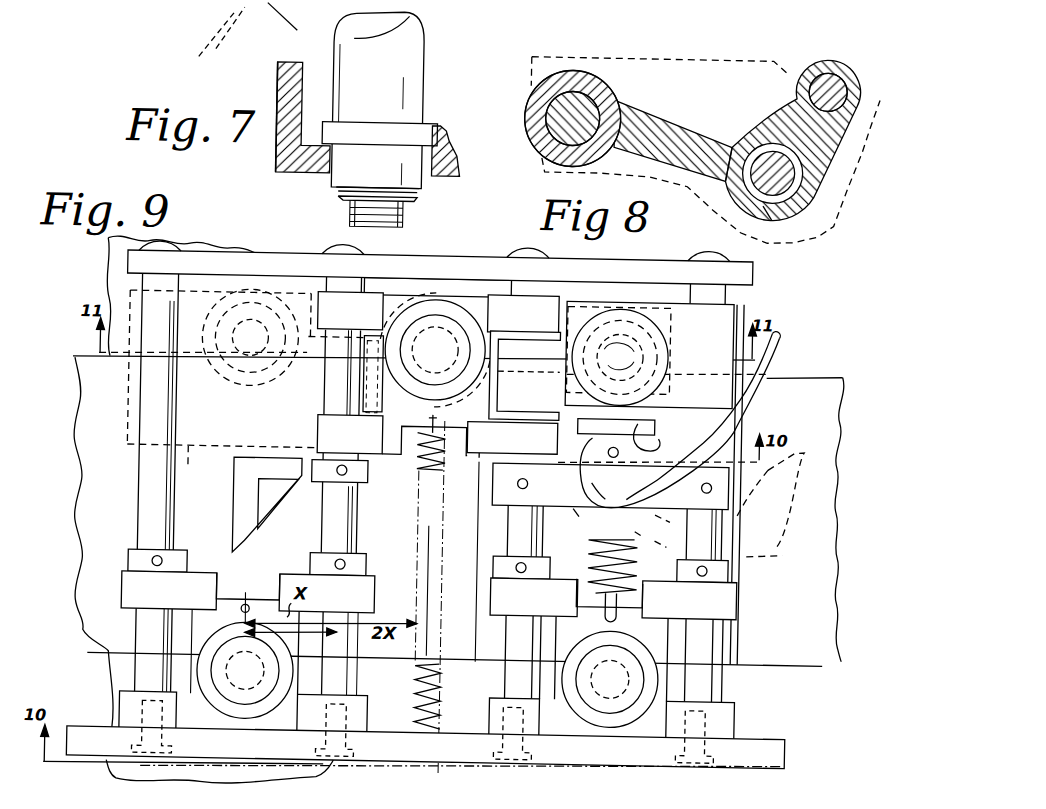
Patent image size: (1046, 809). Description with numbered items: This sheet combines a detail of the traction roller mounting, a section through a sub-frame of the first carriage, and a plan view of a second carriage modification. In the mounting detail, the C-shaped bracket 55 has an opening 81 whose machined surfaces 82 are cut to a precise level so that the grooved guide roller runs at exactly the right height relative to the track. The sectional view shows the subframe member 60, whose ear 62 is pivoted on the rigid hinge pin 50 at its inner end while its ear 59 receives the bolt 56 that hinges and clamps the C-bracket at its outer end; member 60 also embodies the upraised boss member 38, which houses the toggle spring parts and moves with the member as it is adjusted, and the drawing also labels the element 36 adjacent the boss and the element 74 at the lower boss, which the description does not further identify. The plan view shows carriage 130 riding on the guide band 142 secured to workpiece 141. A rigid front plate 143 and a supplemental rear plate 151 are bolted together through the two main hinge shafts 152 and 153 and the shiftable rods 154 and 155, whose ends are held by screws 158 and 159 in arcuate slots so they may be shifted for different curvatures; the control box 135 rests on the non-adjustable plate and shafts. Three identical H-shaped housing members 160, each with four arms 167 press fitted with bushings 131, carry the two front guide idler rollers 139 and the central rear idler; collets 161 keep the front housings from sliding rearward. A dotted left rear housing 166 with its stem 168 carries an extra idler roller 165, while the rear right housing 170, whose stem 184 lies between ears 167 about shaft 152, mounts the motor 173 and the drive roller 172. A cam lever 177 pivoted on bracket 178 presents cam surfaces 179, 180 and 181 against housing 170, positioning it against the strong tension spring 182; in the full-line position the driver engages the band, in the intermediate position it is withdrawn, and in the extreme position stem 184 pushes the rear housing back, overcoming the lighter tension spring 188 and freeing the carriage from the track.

In FIG. 7, the C-shaped bracket 55 is at (273, 97).
In FIG. 8, the C-shaped bracket 55 is at (634, 54).
In FIG. 7, the opening 81 is at (304, 90).
In FIG. 7, the machined surfaces 82 is at (310, 136).
In FIG. 8, the pivot pin 36 is at (806, 82).
In FIG. 8, the upraised boss member 38 is at (840, 58).
In FIG. 8, the hinge pin 50 is at (555, 118).
In FIG. 8, the bolt 56 is at (773, 183).
In FIG. 8, the ear 59 is at (753, 204).
In FIG. 8, the subframe member 60 is at (672, 122).
In FIG. 8, the ear 62 is at (600, 80).
In FIG. 8, the bearing ring 74 is at (798, 161).
In FIG. 9, the carriage 130 is at (752, 707).
In FIG. 9, the bushing 131 is at (128, 584).
In FIG. 9, the control box 135 is at (258, 532).
In FIG. 9, the front guide idler roller 139 is at (490, 318).
In FIG. 9, the workpiece 141 is at (108, 672).
In FIG. 9, the guide band 142 is at (100, 353).
In FIG. 9, the front plate 143 is at (612, 758).
In FIG. 9, the rear plate 151 is at (478, 256).
In FIG. 9, the main hinge shaft 152 is at (543, 531).
In FIG. 9, the main hinge shaft 153 is at (365, 522).
In FIG. 9, the shiftable rod 154 is at (728, 520).
In FIG. 9, the shiftable rod 155 is at (180, 514).
In FIG. 9, the screw 158 is at (722, 760).
In FIG. 9, the screw 159 is at (150, 780).
In FIG. 9, the housing member 160 is at (376, 476).
In FIG. 9, the collet 161 is at (375, 504).
In FIG. 9, the idler roller 165 is at (262, 264).
In FIG. 9, the left rear housing 166 is at (246, 385).
In FIG. 9, the arm 167 is at (330, 312).
In FIG. 9, the stem 168 is at (336, 416).
In FIG. 9, the rear right housing 170 is at (738, 310).
In FIG. 9, the drive roller 172 is at (668, 333).
In FIG. 9, the motor 173 is at (565, 341).
In FIG. 9, the cam lever 177 is at (782, 360).
In FIG. 9, the bracket 178 is at (576, 500).
In FIG. 9, the cam surface 179 is at (606, 484).
In FIG. 9, the cam surface 180 is at (594, 458).
In FIG. 9, the cam surface 181 is at (654, 441).
In FIG. 9, the tension spring 182 is at (642, 560).
In FIG. 9, the stem 184 is at (456, 420).
In FIG. 9, the tension spring 188 is at (420, 672).